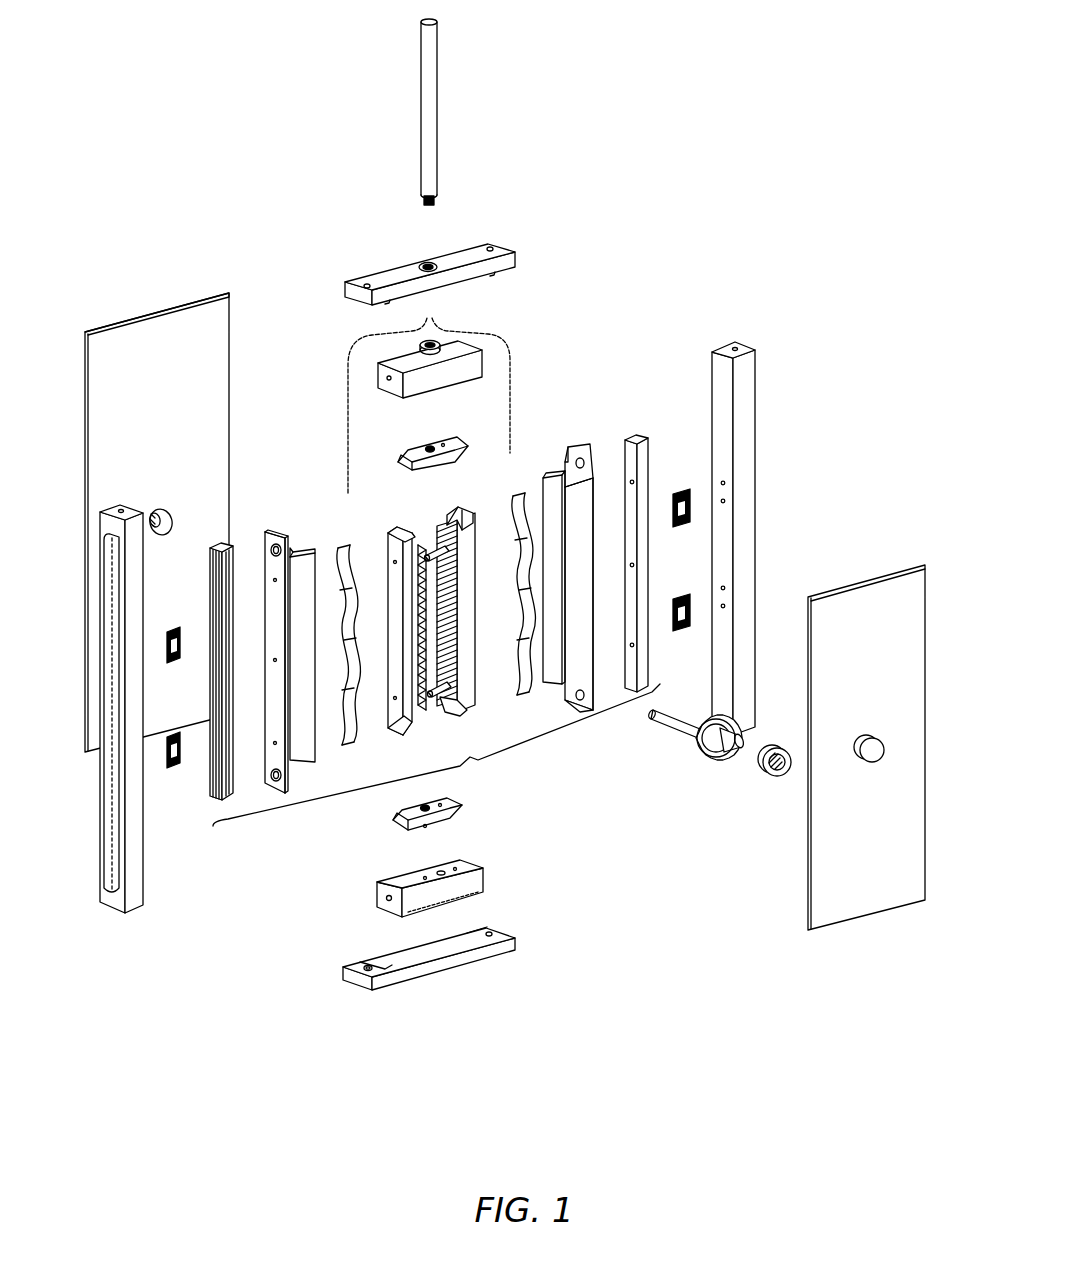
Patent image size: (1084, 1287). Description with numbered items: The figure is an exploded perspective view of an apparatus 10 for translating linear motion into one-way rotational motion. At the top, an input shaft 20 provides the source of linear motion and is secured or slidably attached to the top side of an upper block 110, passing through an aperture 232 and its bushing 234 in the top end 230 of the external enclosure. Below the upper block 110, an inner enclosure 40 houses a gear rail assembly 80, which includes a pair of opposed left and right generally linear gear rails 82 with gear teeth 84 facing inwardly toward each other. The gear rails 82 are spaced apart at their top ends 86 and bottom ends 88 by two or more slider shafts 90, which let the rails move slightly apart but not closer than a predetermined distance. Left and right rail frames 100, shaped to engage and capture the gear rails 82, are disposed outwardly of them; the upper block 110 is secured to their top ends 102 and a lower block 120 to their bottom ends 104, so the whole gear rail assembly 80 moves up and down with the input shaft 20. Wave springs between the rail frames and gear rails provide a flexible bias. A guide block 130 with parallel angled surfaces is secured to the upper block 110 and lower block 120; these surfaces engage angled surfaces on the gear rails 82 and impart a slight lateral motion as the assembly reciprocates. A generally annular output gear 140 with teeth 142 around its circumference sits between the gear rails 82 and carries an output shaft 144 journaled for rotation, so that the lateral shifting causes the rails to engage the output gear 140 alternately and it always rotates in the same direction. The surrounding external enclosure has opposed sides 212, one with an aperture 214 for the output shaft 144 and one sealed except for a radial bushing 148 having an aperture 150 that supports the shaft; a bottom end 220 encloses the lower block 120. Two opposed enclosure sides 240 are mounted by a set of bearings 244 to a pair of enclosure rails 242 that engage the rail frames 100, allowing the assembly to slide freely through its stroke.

The apparatus 10 is at (793, 128).
The input shaft 20 is at (455, 54).
The inner enclosure 40 is at (436, 755).
The gear rail assembly 80 is at (429, 392).
The gear rails 82 is at (397, 641).
The gear teeth 84 is at (457, 573).
The top ends 86 is at (395, 528).
The bottom ends 88 is at (398, 710).
The slider shafts 90 is at (435, 548).
The rail frames 100 is at (276, 538).
The top ends 102 is at (281, 565).
The bottom ends 104 is at (293, 762).
The upper block 110 is at (345, 596).
The lower block 120 is at (474, 881).
The guide block 130 is at (426, 458).
The output gear 140 is at (700, 760).
The teeth 142 is at (720, 762).
The output shaft 144 is at (664, 726).
The radial bushing 148 is at (778, 749).
The aperture 150 is at (784, 778).
The sides 212 is at (180, 343).
The aperture 214 is at (168, 513).
The bottom end 220 is at (448, 962).
The top end 230 is at (470, 262).
The aperture 232 is at (432, 262).
The bushing 234 is at (428, 267).
The enclosure sides 240 is at (112, 850).
The enclosure rails 242 is at (210, 788).
The bearings 244 is at (176, 665).